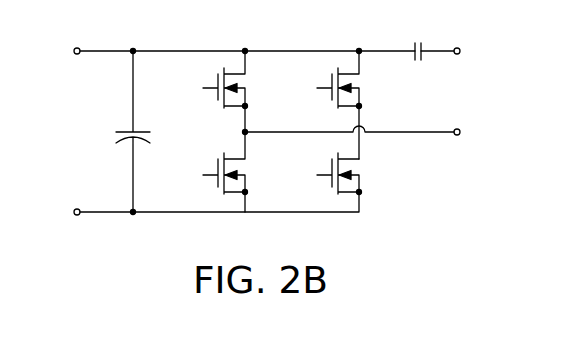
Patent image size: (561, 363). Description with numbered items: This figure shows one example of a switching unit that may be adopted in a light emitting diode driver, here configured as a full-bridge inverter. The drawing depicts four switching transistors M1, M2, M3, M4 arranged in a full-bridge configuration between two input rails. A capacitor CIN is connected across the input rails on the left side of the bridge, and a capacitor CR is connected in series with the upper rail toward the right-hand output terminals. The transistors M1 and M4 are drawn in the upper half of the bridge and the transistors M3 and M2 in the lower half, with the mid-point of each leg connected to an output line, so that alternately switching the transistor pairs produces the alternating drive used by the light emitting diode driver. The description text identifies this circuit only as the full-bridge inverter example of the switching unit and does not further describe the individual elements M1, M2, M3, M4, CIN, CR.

The first transistor M1 is at (220, 92).
The second transistor M2 is at (332, 173).
The third transistor M3 is at (220, 172).
The fourth transistor M4 is at (332, 104).
The input capacitor CIN is at (140, 132).
The resonant capacitor CR is at (417, 40).